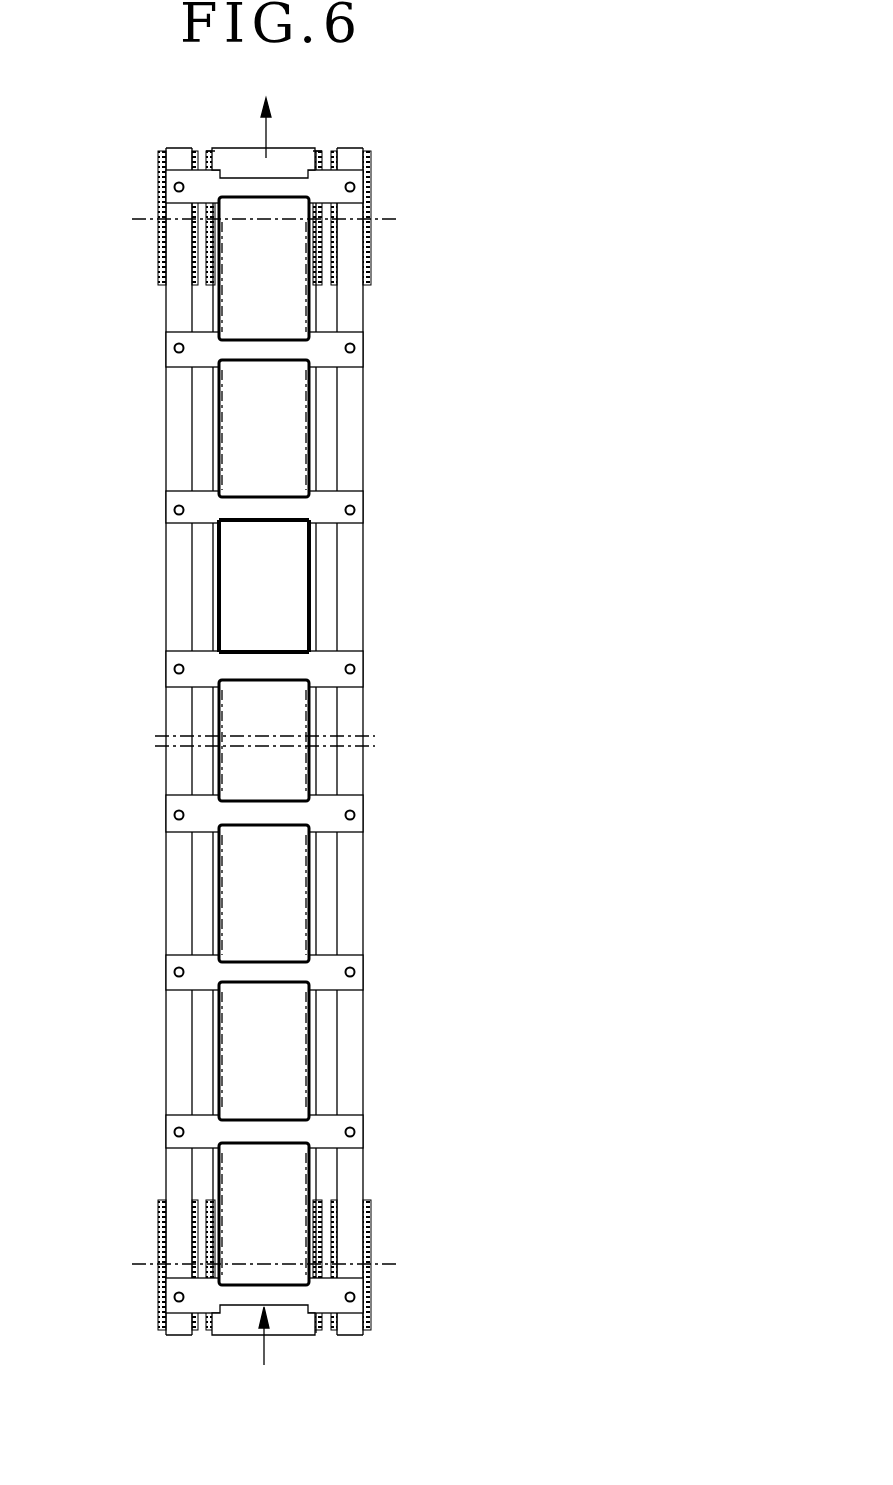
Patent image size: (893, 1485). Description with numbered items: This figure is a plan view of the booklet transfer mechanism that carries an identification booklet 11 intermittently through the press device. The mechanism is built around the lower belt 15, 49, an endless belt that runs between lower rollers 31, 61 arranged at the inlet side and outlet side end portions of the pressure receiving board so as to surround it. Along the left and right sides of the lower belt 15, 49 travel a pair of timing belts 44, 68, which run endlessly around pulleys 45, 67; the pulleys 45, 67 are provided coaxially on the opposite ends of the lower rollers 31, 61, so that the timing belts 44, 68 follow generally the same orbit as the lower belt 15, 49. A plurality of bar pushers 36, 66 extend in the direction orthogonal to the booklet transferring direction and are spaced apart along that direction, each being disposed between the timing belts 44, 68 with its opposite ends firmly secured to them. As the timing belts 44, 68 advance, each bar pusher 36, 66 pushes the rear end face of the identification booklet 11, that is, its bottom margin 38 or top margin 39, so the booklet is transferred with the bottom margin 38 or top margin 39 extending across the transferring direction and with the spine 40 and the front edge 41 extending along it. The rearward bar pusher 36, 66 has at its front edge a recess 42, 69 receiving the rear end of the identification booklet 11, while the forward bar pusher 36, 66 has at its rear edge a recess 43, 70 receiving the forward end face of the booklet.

The identification booklet 11 is at (271, 820).
The lower belt 15 is at (347, 742).
The lower belt 49 is at (325, 410).
The lower rollers 31 is at (347, 740).
The lower rollers 61 is at (318, 258).
The bar pushers 36 is at (204, 815).
The bar pushers 66 is at (195, 503).
The bottom margin 38 is at (300, 652).
The top margin 39 is at (272, 522).
The spine 40 is at (307, 582).
The front edge 41 is at (217, 608).
The recess 42 is at (348, 679).
The recess 69 is at (280, 657).
The recess 43 is at (349, 503).
The recess 70 is at (293, 516).
The timing belts 44 is at (268, 741).
The timing belt 68 is at (177, 409).
The pulleys 45 is at (267, 740).
The pulleys 67 is at (163, 183).